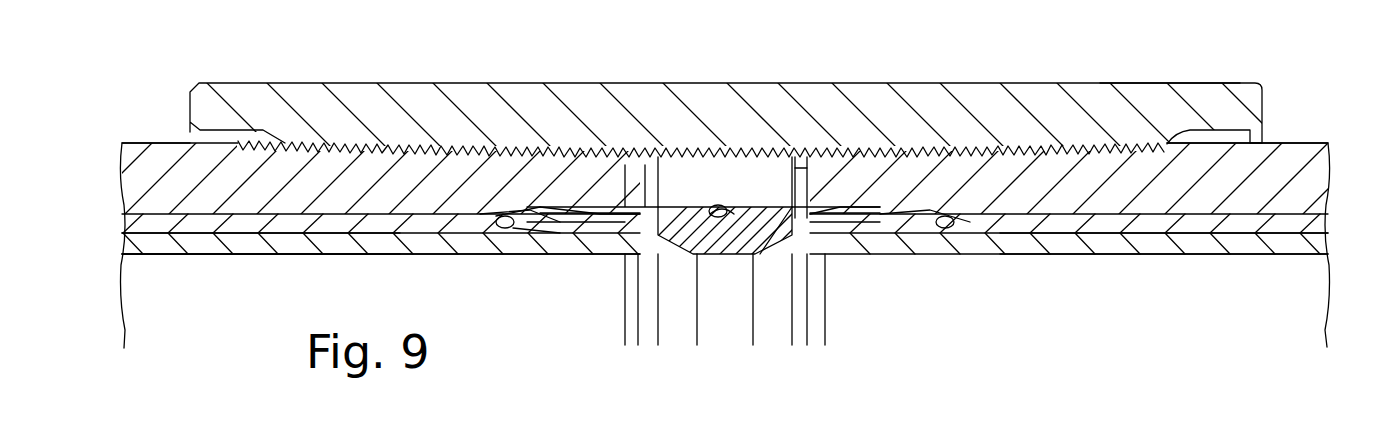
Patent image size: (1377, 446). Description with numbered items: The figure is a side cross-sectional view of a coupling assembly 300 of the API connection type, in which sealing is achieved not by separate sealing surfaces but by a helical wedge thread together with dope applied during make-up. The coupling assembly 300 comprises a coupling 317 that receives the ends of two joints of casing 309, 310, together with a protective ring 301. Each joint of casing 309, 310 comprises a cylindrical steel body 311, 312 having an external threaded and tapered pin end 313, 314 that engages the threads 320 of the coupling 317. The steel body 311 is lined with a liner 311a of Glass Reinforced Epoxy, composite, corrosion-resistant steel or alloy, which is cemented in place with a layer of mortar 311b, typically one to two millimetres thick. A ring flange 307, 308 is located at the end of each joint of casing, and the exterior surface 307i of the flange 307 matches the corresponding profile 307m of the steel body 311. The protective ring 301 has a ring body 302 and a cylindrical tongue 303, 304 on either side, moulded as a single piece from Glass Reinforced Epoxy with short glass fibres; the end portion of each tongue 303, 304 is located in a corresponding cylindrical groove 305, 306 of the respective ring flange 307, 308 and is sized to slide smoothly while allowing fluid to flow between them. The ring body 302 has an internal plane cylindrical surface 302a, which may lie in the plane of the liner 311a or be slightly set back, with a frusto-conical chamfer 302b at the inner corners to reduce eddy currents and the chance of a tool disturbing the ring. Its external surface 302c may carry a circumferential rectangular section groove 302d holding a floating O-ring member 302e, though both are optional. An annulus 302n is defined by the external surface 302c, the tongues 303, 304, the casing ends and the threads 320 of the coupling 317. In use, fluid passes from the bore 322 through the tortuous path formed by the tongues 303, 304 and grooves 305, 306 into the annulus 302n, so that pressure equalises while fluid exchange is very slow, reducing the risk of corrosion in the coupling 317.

The coupling assembly 300 is at (928, 82).
The protective ring 301 is at (745, 323).
The ring body 302 is at (778, 205).
The internal plane cylindrical surface 302a is at (727, 335).
The frusto-conical chamfer 302b is at (680, 330).
The external surface 302c is at (655, 205).
The circumferential rectangular section groove 302d is at (725, 217).
The floating O-ring member 302e is at (715, 225).
The annulus 302n is at (768, 188).
The cylindrical tongue 303 is at (598, 146).
The cylindrical tongue 304 is at (815, 208).
The cylindrical groove 305 is at (560, 256).
The cylindrical groove 306 is at (858, 238).
The ring flange 307 is at (522, 253).
The profile 307m is at (530, 205).
The exterior surface 307i is at (537, 210).
The ring flange 308 is at (918, 233).
The joint of casing 309 is at (133, 143).
The joint of casing 310 is at (1322, 143).
The cylindrical steel body 311 is at (165, 141).
The liner 311a is at (193, 257).
The layer of mortar 311b is at (262, 256).
The cylindrical steel body 312 is at (1262, 160).
The external threaded and tapered pin end 313 is at (347, 180).
The external threaded and tapered pin end 314 is at (1088, 180).
The coupling 317 is at (1085, 82).
The threads 320 is at (813, 207).
The bore 322 is at (500, 337).